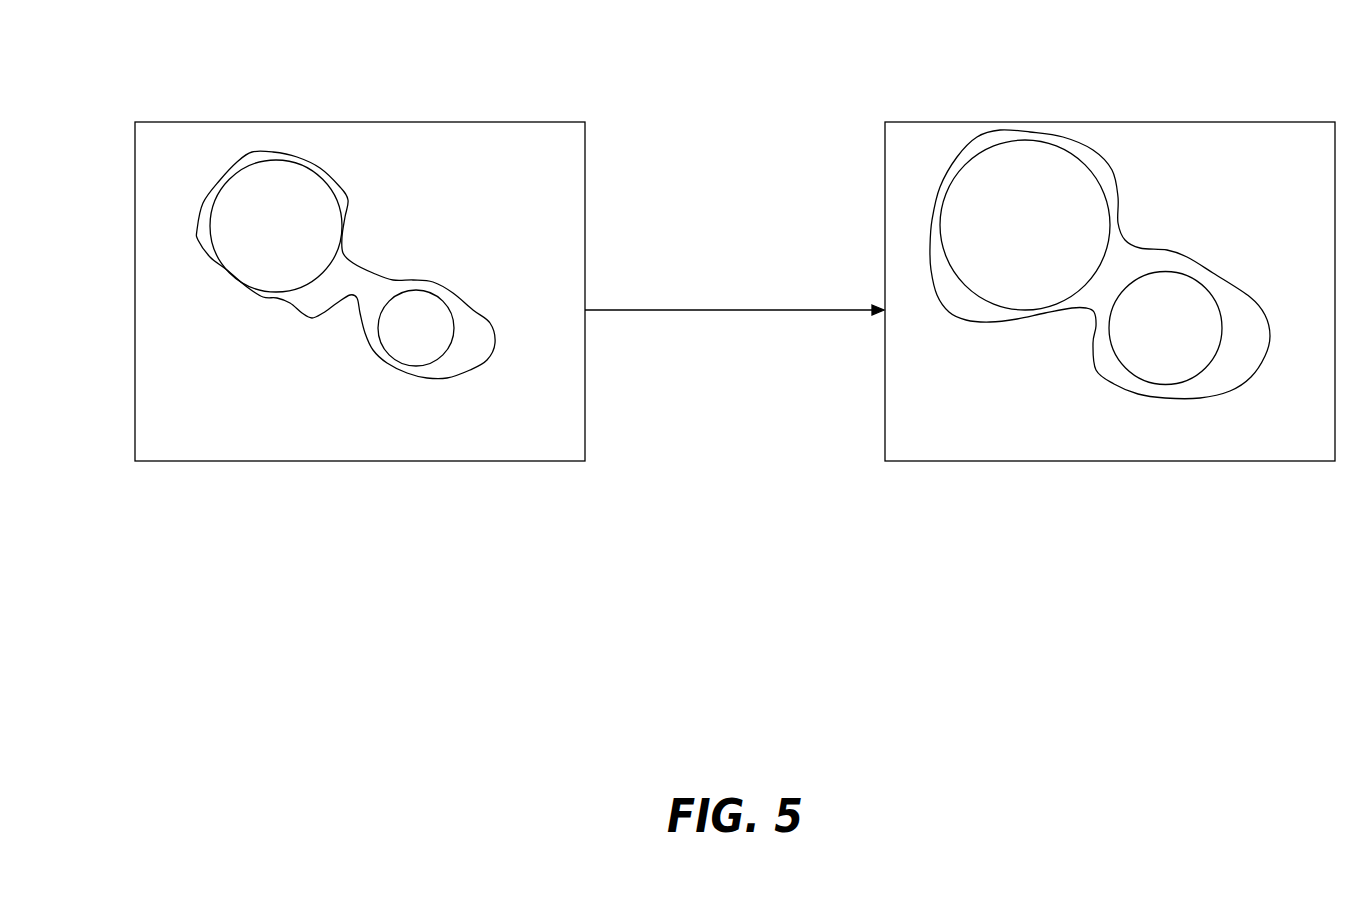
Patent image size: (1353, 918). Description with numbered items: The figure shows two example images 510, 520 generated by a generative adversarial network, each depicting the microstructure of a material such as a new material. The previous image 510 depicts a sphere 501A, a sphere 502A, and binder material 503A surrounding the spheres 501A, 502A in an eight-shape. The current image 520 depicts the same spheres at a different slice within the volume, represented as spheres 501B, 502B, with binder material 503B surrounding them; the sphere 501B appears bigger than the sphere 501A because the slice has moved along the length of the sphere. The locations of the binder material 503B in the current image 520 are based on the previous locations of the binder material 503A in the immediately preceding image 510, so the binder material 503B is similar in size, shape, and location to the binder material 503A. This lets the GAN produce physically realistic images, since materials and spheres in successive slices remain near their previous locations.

The image 510 is at (285, 121).
The image 520 is at (1035, 121).
The sphere 501A is at (276, 226).
The sphere 502A is at (416, 328).
The binder material 503A is at (298, 313).
The sphere 501B is at (1025, 225).
The sphere 502B is at (1165, 328).
The binder material 503B is at (1093, 348).